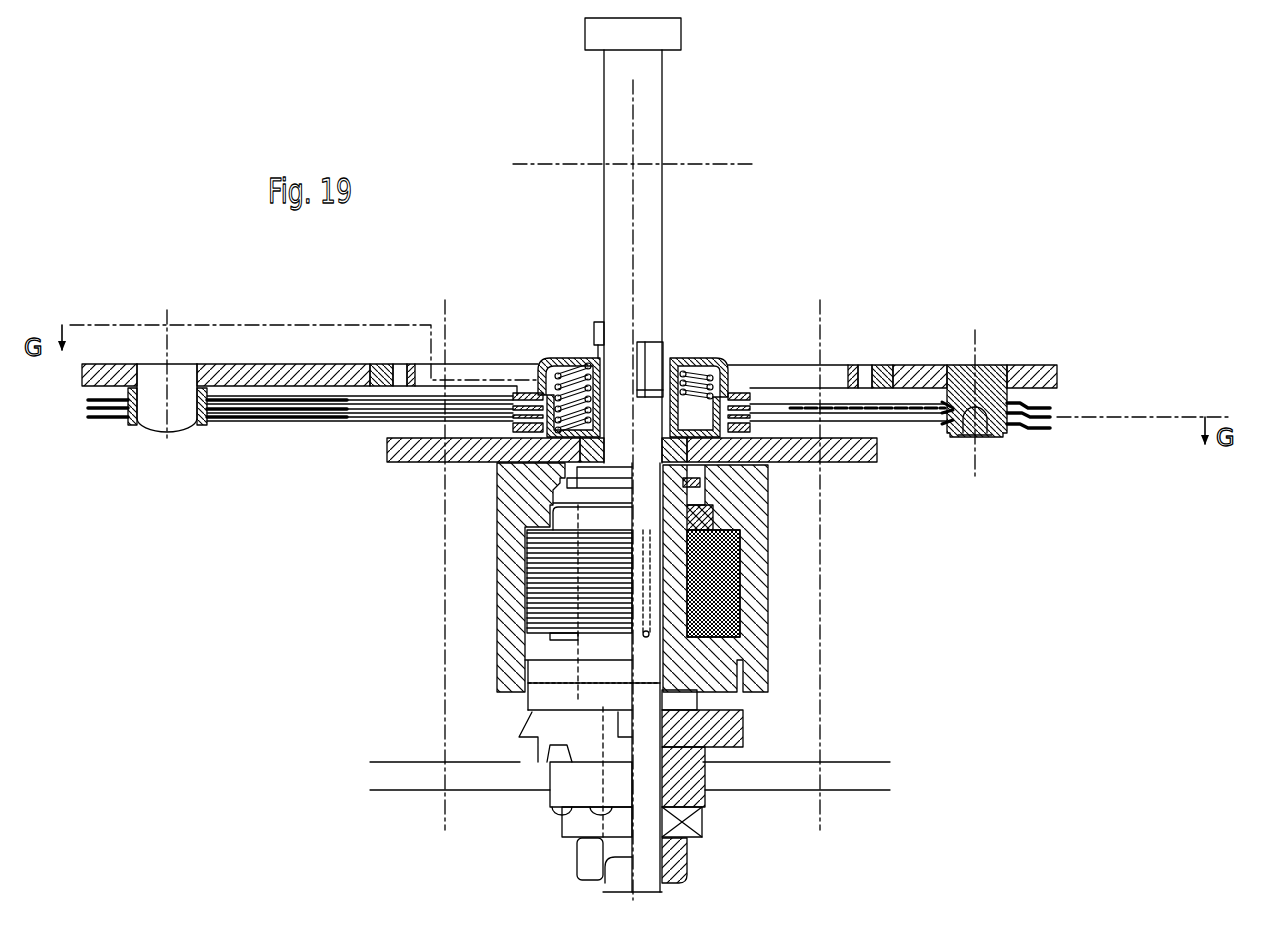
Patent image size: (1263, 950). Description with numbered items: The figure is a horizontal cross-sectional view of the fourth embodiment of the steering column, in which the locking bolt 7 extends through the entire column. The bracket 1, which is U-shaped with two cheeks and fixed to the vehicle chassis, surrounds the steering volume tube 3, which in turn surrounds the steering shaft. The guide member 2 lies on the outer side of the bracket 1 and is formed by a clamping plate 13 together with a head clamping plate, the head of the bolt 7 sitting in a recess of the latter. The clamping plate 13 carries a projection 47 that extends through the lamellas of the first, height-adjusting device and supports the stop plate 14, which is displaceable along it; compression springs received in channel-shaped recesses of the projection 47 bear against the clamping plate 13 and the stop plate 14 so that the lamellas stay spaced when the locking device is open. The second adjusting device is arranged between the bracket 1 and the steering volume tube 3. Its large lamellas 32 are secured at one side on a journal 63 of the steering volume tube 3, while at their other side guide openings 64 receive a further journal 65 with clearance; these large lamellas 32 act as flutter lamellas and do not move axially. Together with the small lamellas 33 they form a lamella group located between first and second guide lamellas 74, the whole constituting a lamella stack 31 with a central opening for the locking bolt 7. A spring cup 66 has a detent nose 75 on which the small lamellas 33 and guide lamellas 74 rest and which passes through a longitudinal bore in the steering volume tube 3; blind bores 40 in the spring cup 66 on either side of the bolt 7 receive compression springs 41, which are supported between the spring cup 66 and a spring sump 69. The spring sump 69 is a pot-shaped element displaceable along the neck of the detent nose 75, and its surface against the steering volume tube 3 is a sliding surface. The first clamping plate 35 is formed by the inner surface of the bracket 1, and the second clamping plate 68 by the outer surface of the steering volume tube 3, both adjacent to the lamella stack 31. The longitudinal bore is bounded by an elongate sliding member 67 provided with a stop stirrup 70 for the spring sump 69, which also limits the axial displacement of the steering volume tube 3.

The bracket 1 is at (770, 478).
The guide member 2 is at (515, 701).
The steering volume tube 3 is at (1030, 378).
The locking bolt 7 is at (640, 147).
The clamping plate 13 is at (545, 672).
The stop plate 14 is at (770, 530).
The lamella stack 31 is at (484, 368).
The large lamellas 32 is at (267, 422).
The small lamellas 33 is at (757, 364).
The first clamping plate 35 is at (430, 385).
The blind bores 40 is at (478, 462).
The compression springs 41 is at (696, 343).
The projection 47 is at (770, 605).
The journal 63 is at (158, 417).
The guide openings 64 is at (950, 365).
The journal 65 is at (989, 436).
The spring cup 66 is at (717, 365).
The elongate sliding member 67 is at (883, 362).
The second clamping plate 68 is at (420, 398).
The spring sump 69 is at (580, 360).
The stop stirrup 70 is at (853, 362).
The guide lamellas 74 is at (518, 390).
The detent nose 75 is at (596, 335).